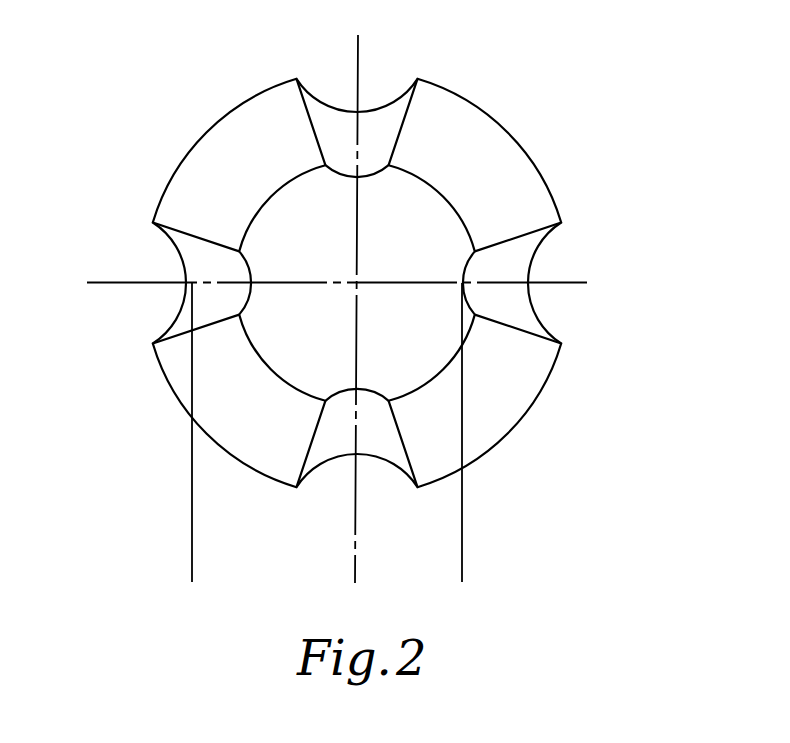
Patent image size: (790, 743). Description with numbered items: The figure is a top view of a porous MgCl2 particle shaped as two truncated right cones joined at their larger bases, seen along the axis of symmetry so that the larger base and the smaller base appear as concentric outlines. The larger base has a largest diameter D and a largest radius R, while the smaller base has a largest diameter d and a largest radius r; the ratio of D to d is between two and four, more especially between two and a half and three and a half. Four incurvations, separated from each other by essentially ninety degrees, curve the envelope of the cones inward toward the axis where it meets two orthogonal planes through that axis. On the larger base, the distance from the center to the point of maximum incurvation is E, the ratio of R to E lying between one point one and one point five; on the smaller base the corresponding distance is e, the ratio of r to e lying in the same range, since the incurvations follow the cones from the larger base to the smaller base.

The largest diameter of the small base d is at (443, 369).
The largest radius of the smaller base r is at (357, 283).
The largest diameter of the bases D is at (206, 434).
The largest radius of the larger base R is at (357, 283).
The distance from center of larger base to point of maximum incurvation E is at (355, 566).
The distance from center of smaller base to point of maximum incurvation e is at (462, 566).